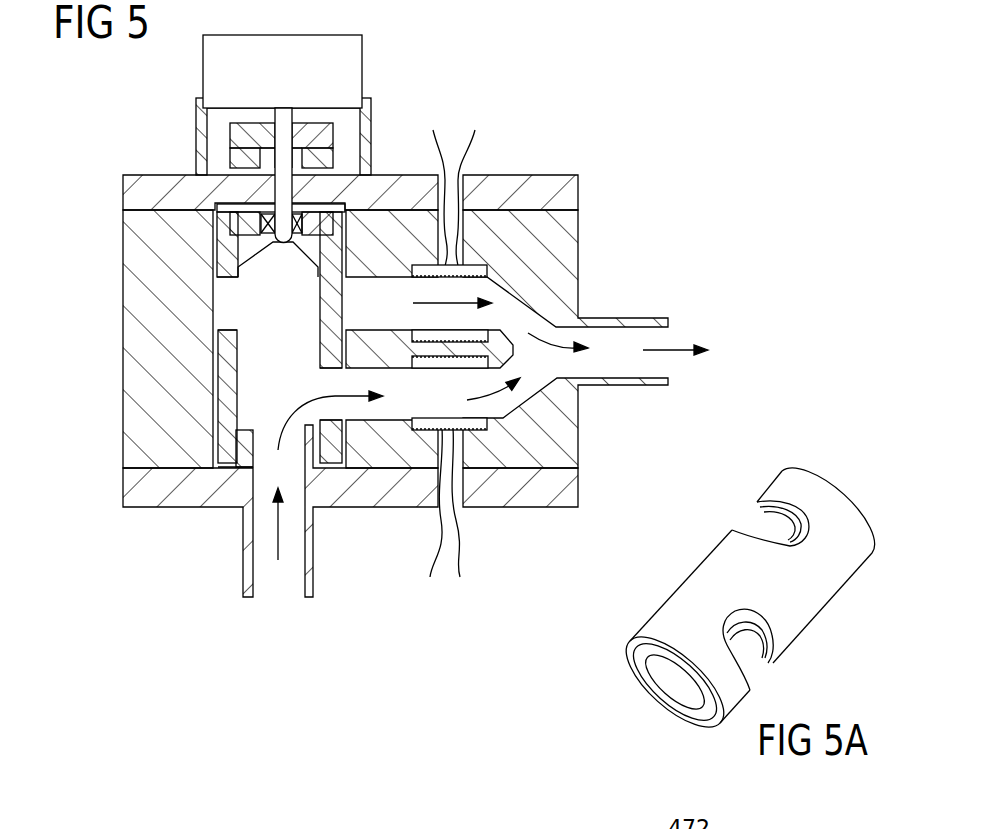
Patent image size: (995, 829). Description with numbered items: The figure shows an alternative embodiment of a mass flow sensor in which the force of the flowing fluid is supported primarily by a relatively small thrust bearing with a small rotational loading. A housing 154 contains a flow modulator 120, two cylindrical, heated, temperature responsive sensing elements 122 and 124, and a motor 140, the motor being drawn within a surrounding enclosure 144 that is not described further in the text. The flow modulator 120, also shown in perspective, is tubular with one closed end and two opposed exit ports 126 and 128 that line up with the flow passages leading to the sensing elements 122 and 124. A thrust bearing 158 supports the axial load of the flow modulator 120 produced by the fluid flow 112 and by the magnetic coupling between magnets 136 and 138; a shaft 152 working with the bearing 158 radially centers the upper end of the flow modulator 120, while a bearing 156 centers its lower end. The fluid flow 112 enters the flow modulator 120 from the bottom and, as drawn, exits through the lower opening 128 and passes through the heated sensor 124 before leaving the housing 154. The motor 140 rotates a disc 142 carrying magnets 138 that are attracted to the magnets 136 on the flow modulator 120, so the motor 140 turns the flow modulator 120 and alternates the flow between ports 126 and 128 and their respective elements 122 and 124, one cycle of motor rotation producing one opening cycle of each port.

In FIG. 5, the fluid flow 112 is at (277, 548).
In FIG. 5, the flow modulator 120 is at (205, 350).
In FIG. 5A, the flow modulator 120 is at (684, 543).
In FIG. 5, the heated temperature responsive sensing element 122 is at (493, 266).
In FIG. 5, the heated temperature responsive sensing element 124 is at (501, 427).
In FIG. 5, the exit port 126 is at (228, 320).
In FIG. 5A, the exit port 126 is at (753, 508).
In FIG. 5, the exit port 128 is at (333, 370).
In FIG. 5A, the exit port 128 is at (766, 666).
In FIG. 5, the magnets 136 is at (228, 224).
In FIG. 5, the magnets 138 is at (230, 160).
In FIG. 5, the motor 140 is at (300, 82).
In FIG. 5, the disc 142 is at (230, 147).
In FIG. 5, the solenoid housing 144 is at (196, 120).
In FIG. 5, the shaft 152 is at (223, 268).
In FIG. 5, the housing 154 is at (108, 458).
In FIG. 5, the bearing 156 is at (236, 440).
In FIG. 5, the thrust bearing 158 is at (265, 204).